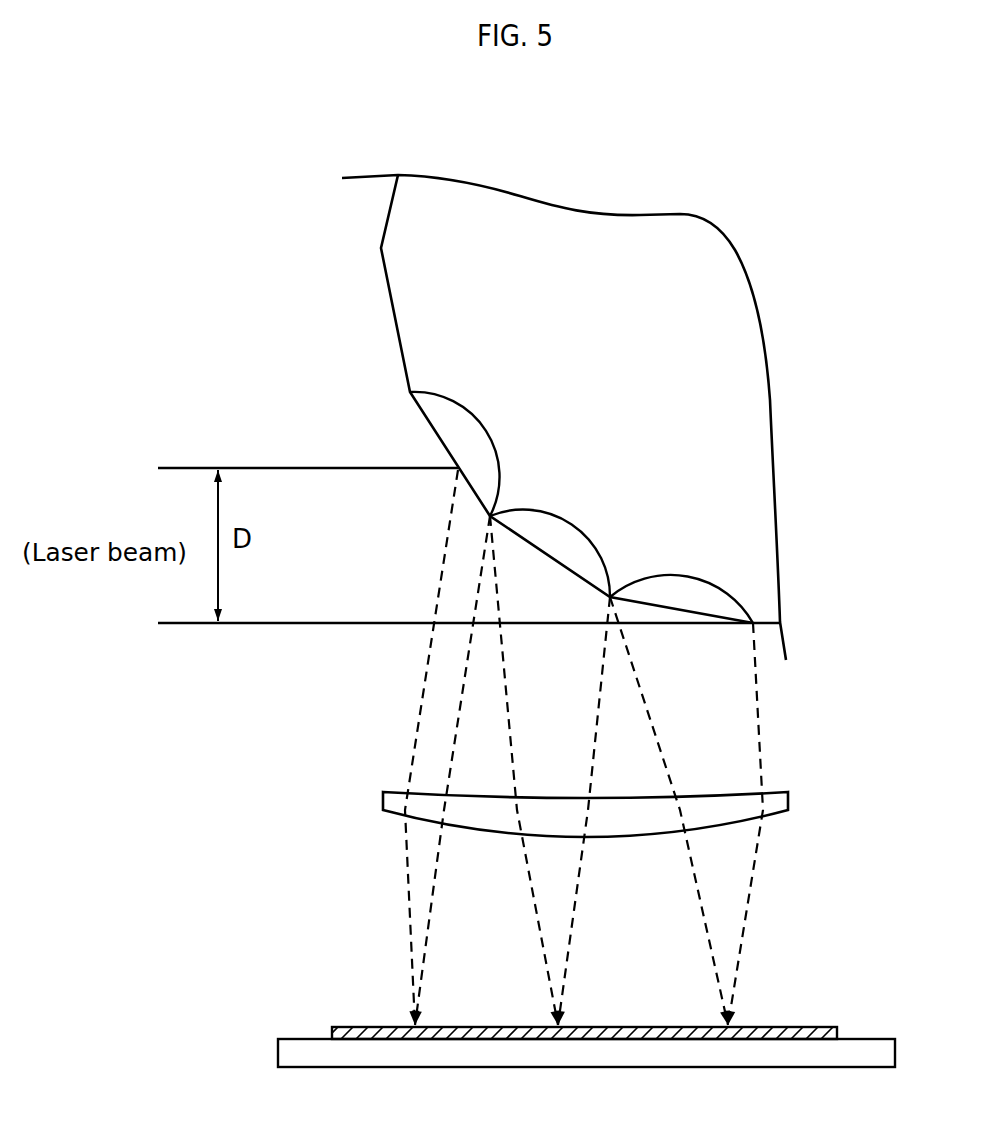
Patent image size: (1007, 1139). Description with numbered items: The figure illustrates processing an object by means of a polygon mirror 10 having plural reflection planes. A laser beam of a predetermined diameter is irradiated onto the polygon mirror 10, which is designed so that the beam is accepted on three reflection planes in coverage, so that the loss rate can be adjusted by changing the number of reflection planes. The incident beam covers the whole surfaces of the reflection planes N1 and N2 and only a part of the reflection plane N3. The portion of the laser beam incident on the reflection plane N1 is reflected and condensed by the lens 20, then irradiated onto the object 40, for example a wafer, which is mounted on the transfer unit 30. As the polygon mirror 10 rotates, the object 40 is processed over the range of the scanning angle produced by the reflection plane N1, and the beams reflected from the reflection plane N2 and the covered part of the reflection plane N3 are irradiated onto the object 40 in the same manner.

The polygon mirror 10 is at (777, 267).
The lens 20 is at (383, 798).
The transfer unit 30 is at (293, 1050).
The object 40 is at (348, 1030).
The reflection plane N1 is at (681, 593).
The reflection plane N2 is at (550, 553).
The reflection plane N3 is at (460, 454).